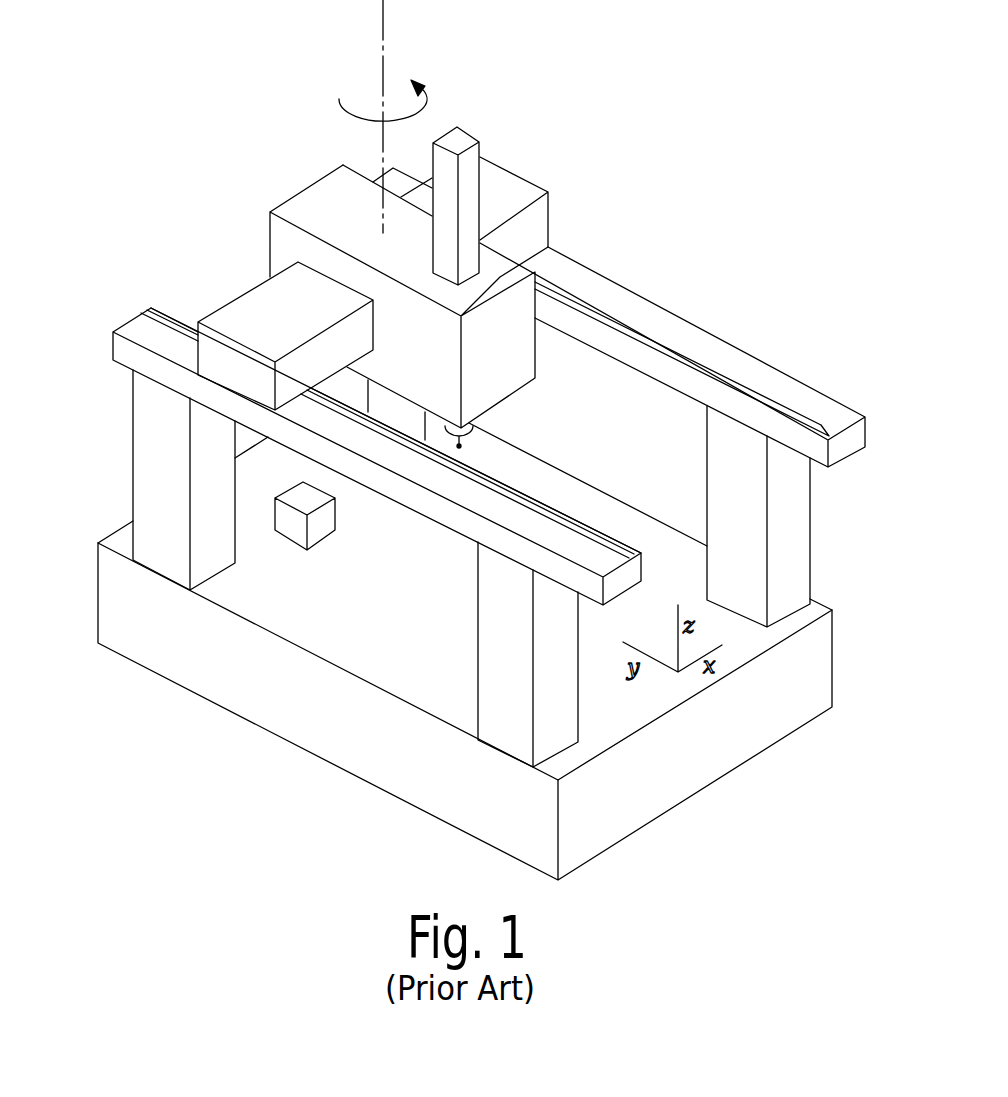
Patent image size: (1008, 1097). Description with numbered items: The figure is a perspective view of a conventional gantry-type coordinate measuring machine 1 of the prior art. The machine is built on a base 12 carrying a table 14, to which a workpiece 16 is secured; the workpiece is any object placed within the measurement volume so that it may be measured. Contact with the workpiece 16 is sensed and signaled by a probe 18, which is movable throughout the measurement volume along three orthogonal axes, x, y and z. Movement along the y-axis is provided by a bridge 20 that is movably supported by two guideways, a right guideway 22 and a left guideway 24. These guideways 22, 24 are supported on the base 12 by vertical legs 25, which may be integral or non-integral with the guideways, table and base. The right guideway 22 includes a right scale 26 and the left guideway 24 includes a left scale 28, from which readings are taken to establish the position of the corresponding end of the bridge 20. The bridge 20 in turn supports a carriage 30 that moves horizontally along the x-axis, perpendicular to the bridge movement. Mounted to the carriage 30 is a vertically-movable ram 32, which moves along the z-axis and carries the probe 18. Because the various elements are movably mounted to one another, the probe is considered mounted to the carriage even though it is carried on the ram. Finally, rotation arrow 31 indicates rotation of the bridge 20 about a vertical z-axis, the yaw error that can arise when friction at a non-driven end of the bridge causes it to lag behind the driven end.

The coordinate measuring machine 1 is at (511, 70).
The base 12 is at (123, 597).
The table 14 is at (411, 650).
The workpiece 16 is at (317, 527).
The probe 18 is at (463, 447).
The bridge 20 is at (248, 312).
The right guideway 22 is at (738, 356).
The left guideway 24 is at (118, 323).
The legs 25 is at (157, 423).
The right scale 26 is at (823, 421).
The left scale 28 is at (152, 308).
The carriage 30 is at (285, 245).
The rotation arrow 31 is at (339, 99).
The ram 32 is at (479, 147).